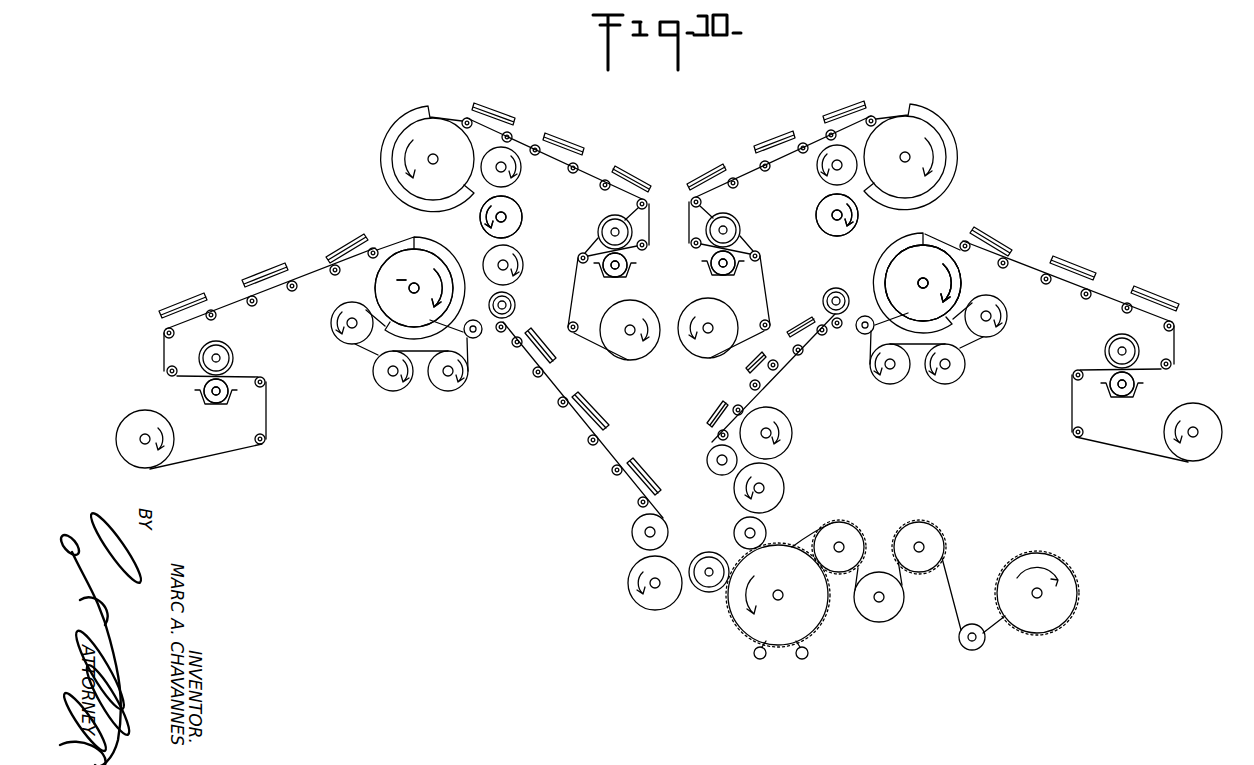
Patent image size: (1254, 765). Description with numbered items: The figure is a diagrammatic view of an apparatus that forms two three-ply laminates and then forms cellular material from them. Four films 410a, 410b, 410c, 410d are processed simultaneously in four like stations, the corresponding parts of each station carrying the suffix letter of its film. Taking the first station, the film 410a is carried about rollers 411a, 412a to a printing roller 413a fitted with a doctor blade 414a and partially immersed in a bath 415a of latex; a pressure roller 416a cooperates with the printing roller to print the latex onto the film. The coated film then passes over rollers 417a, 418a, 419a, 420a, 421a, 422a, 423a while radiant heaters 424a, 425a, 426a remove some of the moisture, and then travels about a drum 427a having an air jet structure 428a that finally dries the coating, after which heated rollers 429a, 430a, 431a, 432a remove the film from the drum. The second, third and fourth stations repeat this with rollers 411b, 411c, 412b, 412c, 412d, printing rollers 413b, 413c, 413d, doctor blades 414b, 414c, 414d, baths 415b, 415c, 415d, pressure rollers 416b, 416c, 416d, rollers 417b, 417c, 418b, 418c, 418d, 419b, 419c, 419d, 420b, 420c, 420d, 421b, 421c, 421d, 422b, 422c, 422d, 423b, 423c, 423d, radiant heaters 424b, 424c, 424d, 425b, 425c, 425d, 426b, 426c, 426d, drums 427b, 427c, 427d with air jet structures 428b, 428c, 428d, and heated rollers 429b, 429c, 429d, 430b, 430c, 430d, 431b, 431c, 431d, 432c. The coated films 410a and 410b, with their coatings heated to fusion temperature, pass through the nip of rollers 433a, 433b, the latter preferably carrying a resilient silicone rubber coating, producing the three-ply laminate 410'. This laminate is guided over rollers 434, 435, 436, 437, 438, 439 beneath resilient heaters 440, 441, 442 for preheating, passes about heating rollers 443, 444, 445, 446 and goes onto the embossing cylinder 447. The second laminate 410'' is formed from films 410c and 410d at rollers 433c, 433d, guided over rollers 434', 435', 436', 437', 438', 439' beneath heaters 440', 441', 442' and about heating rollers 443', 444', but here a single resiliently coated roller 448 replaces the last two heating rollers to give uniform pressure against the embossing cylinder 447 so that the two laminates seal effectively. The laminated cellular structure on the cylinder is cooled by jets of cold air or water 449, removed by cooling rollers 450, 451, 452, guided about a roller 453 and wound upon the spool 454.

The film 410a is at (1092, 464).
The film 410b is at (737, 338).
The film 410c is at (185, 466).
The film 410d is at (606, 346).
The three-ply laminate 410' is at (781, 378).
The second three-ply laminate 410'' is at (574, 420).
The roller 411a is at (1073, 434).
The roller 411b is at (778, 344).
The roller 411c is at (265, 437).
The roller 412a is at (1073, 377).
The roller 412b is at (758, 255).
The roller 412c is at (265, 385).
The roller 412d is at (518, 262).
The printing roller 413a is at (1136, 385).
The printing roller 413b is at (708, 266).
The printing roller 413c is at (203, 391).
The printing roller 413d is at (628, 266).
The doctor blade 414a is at (1107, 375).
The doctor blade 414b is at (740, 246).
The doctor blade 414c is at (232, 372).
The doctor blade 414d is at (598, 240).
The bath 415a is at (1113, 402).
The bath 415b is at (713, 280).
The bath 415c is at (200, 408).
The bath 415d is at (604, 280).
The pressure roller 416a is at (1102, 348).
The pressure roller 416b is at (742, 228).
The pressure roller 416c is at (247, 338).
The pressure roller 416d is at (615, 215).
The roller 417a is at (1172, 366).
The roller 417b is at (692, 243).
The roller 417c is at (166, 371).
The roller 418a is at (1175, 325).
The roller 418b is at (718, 196).
The roller 418c is at (163, 335).
The roller 418d is at (646, 200).
The roller 419a is at (1122, 311).
The roller 419b is at (731, 177).
The roller 419c is at (210, 321).
The roller 419d is at (607, 180).
The roller 420a is at (1088, 290).
The roller 420b is at (763, 159).
The roller 420c is at (255, 307).
The roller 420d is at (576, 164).
The roller 421a is at (1044, 282).
The roller 421b is at (803, 141).
The roller 421c is at (290, 292).
The roller 421d is at (537, 146).
The roller 422a is at (1006, 260).
The roller 422b is at (832, 128).
The roller 422c is at (336, 276).
The roller 422d is at (510, 133).
The roller 423a is at (968, 254).
The roller 423b is at (873, 113).
The roller 423c is at (370, 258).
The roller 423d is at (467, 118).
The radiant heater 424a is at (1172, 298).
The radiant heater 424b is at (708, 170).
The radiant heater 424c is at (185, 309).
The radiant heater 424d is at (632, 178).
The radiant heater 425a is at (1085, 253).
The radiant heater 425b is at (780, 134).
The radiant heater 425c is at (260, 279).
The radiant heater 425d is at (566, 142).
The radiant heater 426a is at (998, 238).
The radiant heater 426b is at (850, 110).
The radiant heater 426c is at (350, 243).
The radiant heater 426d is at (515, 102).
The drum 427a is at (905, 250).
The drum 427b is at (946, 160).
The drum 427c is at (414, 288).
The drum 427d is at (396, 176).
The air jet structure 428a is at (927, 233).
The air jet structure 428b is at (940, 122).
The air jet structure 428c is at (434, 242).
The air jet structure 428d is at (438, 110).
The heated roller 429a is at (990, 338).
The heated roller 429b is at (815, 165).
The heated roller 429c is at (340, 343).
The heated roller 429d is at (519, 170).
The heated roller 430a is at (960, 384).
The heated roller 430b is at (817, 213).
The heated roller 430c is at (381, 389).
The heated roller 430d is at (522, 211).
The heated roller 431a is at (905, 383).
The heated roller 431b is at (762, 258).
The heated roller 431c is at (436, 390).
The heated roller 431d is at (516, 228).
The heated roller 432a is at (923, 283).
The heated roller 432c is at (414, 288).
The roller 433a is at (923, 283).
The roller 433b is at (822, 300).
The roller 433c is at (524, 306).
The roller 433d is at (514, 292).
The roller 434 is at (845, 338).
The roller 434' is at (493, 347).
The roller 435 is at (826, 360).
The roller 435' is at (513, 382).
The roller 436 is at (806, 383).
The roller 436' is at (530, 414).
The roller 437 is at (795, 401).
The roller 437' is at (565, 444).
The roller 438 is at (786, 421).
The roller 438' is at (589, 475).
The roller 439 is at (694, 436).
The roller 439' is at (613, 507).
The resilient heater 440 is at (809, 320).
The resilient heater 440' is at (567, 354).
The resilient heater 441 is at (733, 366).
The resilient heater 441' is at (603, 408).
The resilient heater 442 is at (696, 411).
The resilient heater 442' is at (641, 459).
The heating roller 443 is at (701, 466).
The heating roller 443' is at (622, 532).
The heating roller 444 is at (786, 433).
The heating roller 444' is at (643, 596).
The heating roller 445 is at (783, 480).
The heating roller 446 is at (766, 530).
The embossing cylinder 447 is at (742, 625).
The resiliently coated roller 448 is at (710, 553).
The jets of cold air or water 449 is at (802, 660).
The cooling roller 450 is at (842, 525).
The cooling roller 451 is at (878, 622).
The cooling roller 452 is at (928, 535).
The roller 453 is at (981, 647).
The spool 454 is at (1035, 633).